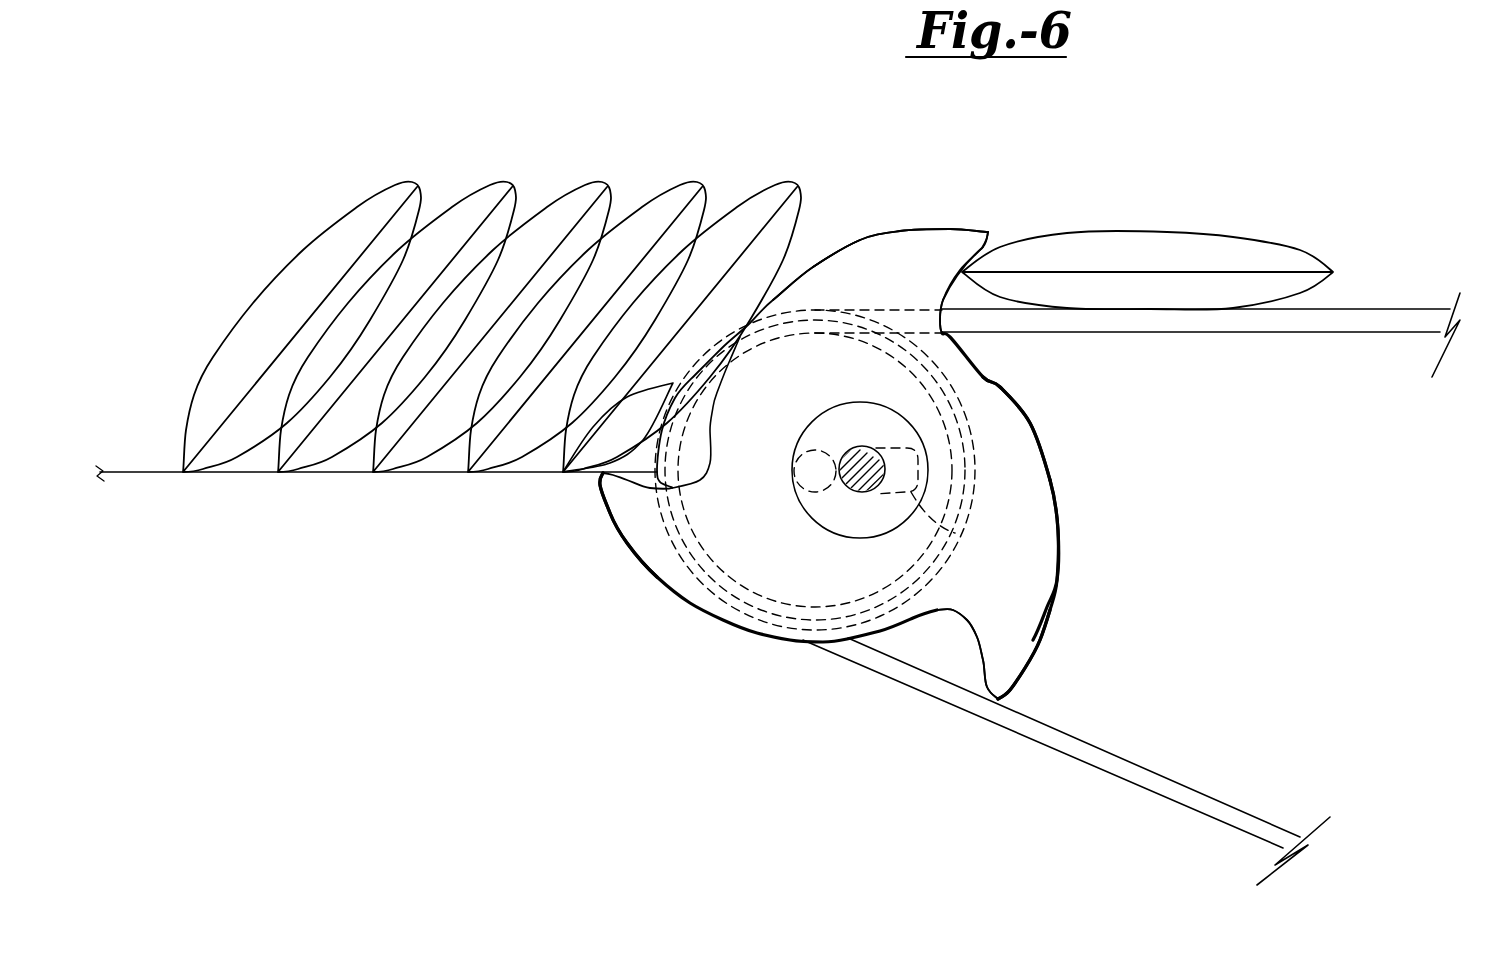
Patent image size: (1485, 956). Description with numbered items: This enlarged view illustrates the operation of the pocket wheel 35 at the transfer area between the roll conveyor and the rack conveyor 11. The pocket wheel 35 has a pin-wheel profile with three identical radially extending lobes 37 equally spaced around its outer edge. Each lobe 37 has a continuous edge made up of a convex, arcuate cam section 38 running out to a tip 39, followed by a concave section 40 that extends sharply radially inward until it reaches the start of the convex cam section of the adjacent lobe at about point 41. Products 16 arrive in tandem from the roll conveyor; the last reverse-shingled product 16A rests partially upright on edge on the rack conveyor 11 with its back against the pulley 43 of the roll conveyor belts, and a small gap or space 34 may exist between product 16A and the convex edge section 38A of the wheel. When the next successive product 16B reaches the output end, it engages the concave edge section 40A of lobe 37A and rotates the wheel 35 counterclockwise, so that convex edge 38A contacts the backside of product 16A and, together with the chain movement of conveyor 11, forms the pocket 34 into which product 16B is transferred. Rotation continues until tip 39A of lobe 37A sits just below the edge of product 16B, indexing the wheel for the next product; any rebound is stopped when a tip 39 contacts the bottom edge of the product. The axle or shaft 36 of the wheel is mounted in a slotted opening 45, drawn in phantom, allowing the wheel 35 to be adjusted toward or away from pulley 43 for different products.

The rack conveyor 11 is at (420, 500).
The product 16 is at (362, 202).
The last reverse-shingled product 16A is at (795, 183).
The next successive product 16B is at (1212, 231).
The gap or space 34 is at (790, 263).
The pocket wheel 35 is at (1043, 525).
The axle or shaft 36 is at (843, 483).
The lobe 37 is at (643, 548).
The lobe 37A is at (937, 230).
The convex cam section 38 is at (1030, 422).
The convex edge section 38A is at (861, 240).
The tip 39 is at (1007, 700).
The tip of lobe 37A 39A is at (988, 233).
The concave section 40 is at (965, 618).
The concave edge section 40A is at (950, 293).
The start of convex cam section 41 is at (947, 322).
The pulley 43 is at (585, 400).
The slotted opening 45 is at (964, 528).